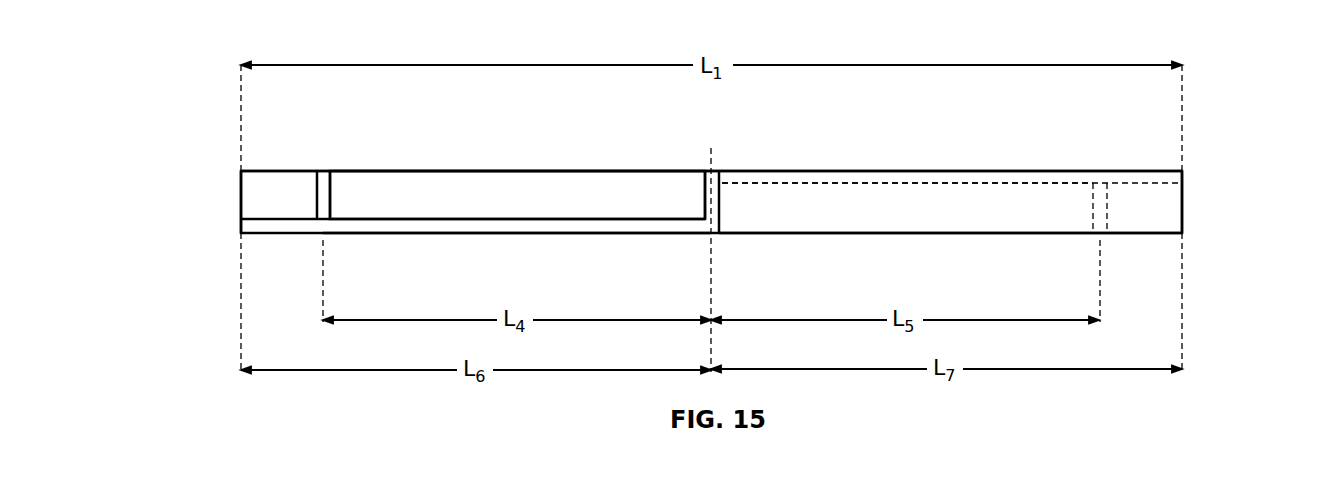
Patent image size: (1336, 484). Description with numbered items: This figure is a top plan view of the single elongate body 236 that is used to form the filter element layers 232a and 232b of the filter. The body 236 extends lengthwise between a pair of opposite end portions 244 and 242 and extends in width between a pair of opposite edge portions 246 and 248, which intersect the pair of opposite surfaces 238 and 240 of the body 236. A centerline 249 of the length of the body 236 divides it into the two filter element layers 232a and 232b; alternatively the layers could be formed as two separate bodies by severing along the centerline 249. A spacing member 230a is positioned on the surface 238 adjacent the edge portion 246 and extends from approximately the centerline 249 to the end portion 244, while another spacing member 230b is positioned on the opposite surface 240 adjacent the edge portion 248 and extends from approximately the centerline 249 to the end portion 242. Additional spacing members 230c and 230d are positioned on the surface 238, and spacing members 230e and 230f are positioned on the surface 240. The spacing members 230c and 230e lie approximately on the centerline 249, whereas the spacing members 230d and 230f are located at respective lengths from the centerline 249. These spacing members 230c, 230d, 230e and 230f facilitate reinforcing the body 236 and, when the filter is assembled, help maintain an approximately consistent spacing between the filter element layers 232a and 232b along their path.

The end portion 244 is at (230, 242).
The end portion 242 is at (1192, 205).
The spacing member 230a is at (558, 220).
The spacing member 230b is at (850, 183).
The spacing member 230c is at (703, 187).
The spacing member 230d is at (332, 182).
The spacing member 230e is at (720, 208).
The spacing member 230f is at (1093, 212).
The filter element layer 232a is at (513, 190).
The filter element layer 232b is at (1022, 203).
The body 236 is at (1132, 240).
The surface 238 is at (757, 200).
The surface 240 is at (915, 222).
The edge portion 246 is at (383, 241).
The edge portion 248 is at (585, 162).
The centerline 249 is at (710, 248).